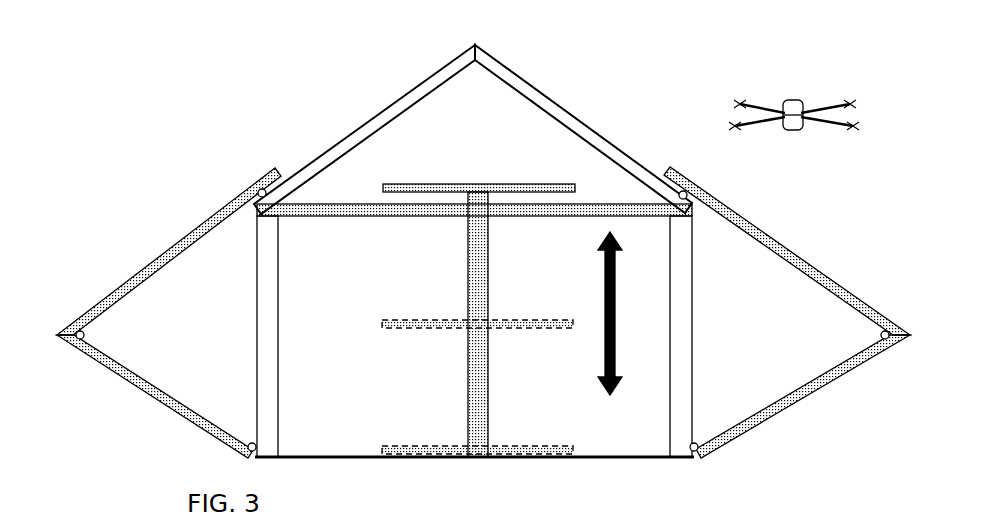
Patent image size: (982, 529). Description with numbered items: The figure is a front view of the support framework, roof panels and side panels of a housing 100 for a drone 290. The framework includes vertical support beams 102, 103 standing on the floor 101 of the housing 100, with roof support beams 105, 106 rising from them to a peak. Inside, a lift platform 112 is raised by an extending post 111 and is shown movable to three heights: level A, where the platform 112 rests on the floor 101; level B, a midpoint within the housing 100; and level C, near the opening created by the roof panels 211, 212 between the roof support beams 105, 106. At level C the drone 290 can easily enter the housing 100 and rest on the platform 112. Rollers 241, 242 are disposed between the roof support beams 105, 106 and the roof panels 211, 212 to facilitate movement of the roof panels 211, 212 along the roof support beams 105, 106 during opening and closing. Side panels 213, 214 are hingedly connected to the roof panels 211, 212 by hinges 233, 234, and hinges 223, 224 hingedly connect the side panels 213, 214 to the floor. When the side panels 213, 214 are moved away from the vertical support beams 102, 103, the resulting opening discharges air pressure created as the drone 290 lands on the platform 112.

The housing 100 is at (155, 178).
The floor 101 is at (640, 459).
The vertical support beam 102 is at (276, 305).
The vertical support beam 103 is at (685, 293).
The roof support beam 105 is at (417, 92).
The roof support beam 106 is at (526, 88).
The post 111 is at (486, 285).
The platform 112 is at (395, 185).
The roof panel 211 is at (135, 283).
The roof panel 212 is at (748, 218).
The side panel 213 is at (118, 372).
The side panel 214 is at (805, 400).
The hinge 223 is at (249, 445).
The hinge 224 is at (697, 445).
The hinge 233 is at (85, 335).
The hinge 234 is at (881, 337).
The roller 241 is at (267, 189).
The roller 242 is at (679, 191).
The drone 290 is at (797, 100).